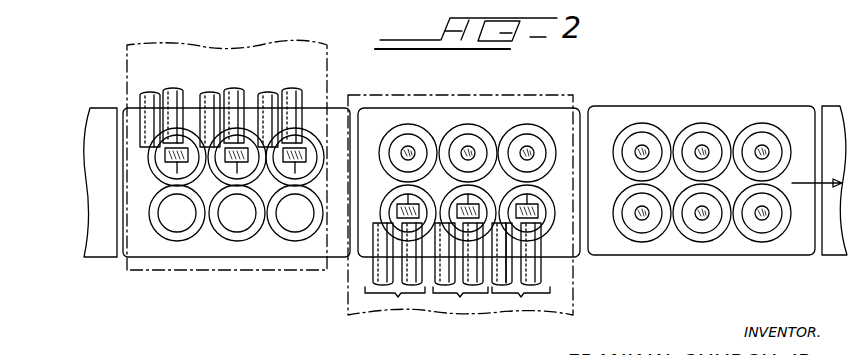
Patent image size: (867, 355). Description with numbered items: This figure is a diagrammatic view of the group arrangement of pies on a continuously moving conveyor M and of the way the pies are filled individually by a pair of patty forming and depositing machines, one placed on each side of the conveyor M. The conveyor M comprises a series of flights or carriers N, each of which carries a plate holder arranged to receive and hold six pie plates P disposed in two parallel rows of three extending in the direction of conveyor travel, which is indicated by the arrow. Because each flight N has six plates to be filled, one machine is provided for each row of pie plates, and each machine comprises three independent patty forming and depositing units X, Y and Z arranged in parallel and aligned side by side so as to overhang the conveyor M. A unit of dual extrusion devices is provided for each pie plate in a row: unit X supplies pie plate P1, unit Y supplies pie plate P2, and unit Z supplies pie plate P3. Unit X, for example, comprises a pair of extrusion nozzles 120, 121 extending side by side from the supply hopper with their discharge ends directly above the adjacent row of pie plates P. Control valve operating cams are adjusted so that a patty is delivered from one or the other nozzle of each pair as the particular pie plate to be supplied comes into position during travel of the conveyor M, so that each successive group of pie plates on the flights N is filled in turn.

The conveyor flight N is at (212, 253).
The conveyor M is at (773, 99).
The pie plate P is at (752, 122).
The pie plate P1 is at (767, 228).
The pie plate P2 is at (702, 228).
The pie plate P3 is at (643, 228).
The patty forming and depositing unit X is at (551, 268).
The patty forming and depositing unit Y is at (460, 268).
The patty forming and depositing unit Z is at (395, 268).
The extrusion nozzle 120 is at (542, 270).
The extrusion nozzle 121 is at (501, 272).